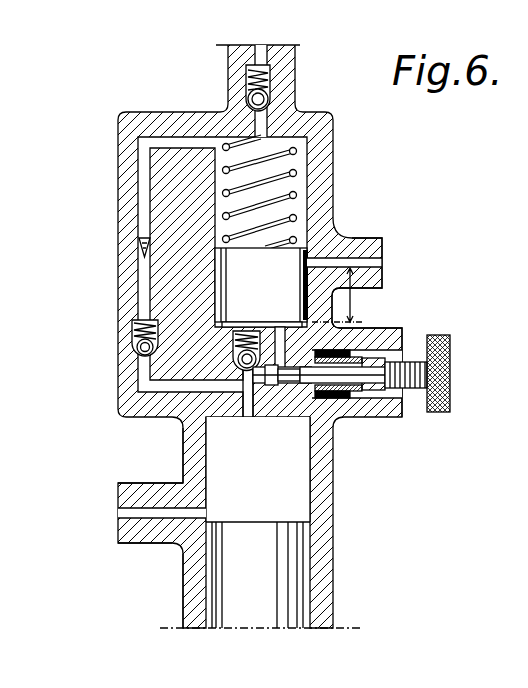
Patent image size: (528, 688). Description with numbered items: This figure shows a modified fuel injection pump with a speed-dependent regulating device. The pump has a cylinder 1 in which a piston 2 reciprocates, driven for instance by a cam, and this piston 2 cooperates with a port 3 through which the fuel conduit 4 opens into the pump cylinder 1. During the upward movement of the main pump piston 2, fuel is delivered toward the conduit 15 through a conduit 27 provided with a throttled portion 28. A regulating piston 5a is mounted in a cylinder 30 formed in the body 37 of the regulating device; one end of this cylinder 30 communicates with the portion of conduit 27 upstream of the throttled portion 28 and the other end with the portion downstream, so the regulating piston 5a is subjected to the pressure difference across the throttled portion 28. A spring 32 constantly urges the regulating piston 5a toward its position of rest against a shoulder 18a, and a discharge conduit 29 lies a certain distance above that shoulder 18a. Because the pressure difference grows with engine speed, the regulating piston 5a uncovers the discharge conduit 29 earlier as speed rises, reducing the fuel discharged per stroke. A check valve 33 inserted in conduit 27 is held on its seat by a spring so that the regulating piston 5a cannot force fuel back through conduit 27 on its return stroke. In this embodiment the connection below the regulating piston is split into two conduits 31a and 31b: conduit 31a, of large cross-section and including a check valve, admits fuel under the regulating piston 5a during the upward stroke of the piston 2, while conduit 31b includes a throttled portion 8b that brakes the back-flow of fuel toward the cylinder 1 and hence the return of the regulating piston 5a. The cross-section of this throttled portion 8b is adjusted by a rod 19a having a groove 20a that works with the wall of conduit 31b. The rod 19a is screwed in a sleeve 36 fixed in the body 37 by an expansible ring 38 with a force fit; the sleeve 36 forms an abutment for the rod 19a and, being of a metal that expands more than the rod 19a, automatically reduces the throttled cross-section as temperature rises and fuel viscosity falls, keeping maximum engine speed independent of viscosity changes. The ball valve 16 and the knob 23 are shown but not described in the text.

The cylinder 1 is at (305, 497).
The piston 2 is at (283, 556).
The port 3 is at (207, 513).
The fuel conduit 4 is at (170, 512).
The regulating piston 5a is at (233, 288).
The throttled portion 8b is at (285, 392).
The conduit 15 is at (265, 118).
The ball valve 16 is at (248, 95).
The shoulder 18a is at (220, 333).
The rod 19a is at (343, 375).
The groove 20a is at (345, 338).
The knob 23 is at (450, 373).
The conduit 27 is at (143, 388).
The throttled portion 28 is at (142, 258).
The discharge conduit 29 is at (373, 265).
The cylinder 30 is at (312, 174).
The conduit 31a is at (182, 423).
The conduit 31b is at (282, 423).
The spring 32 is at (277, 150).
The check valve 33 is at (137, 352).
The sleeve 36 is at (397, 400).
The body 37 is at (350, 247).
The expansible ring 38 is at (387, 338).